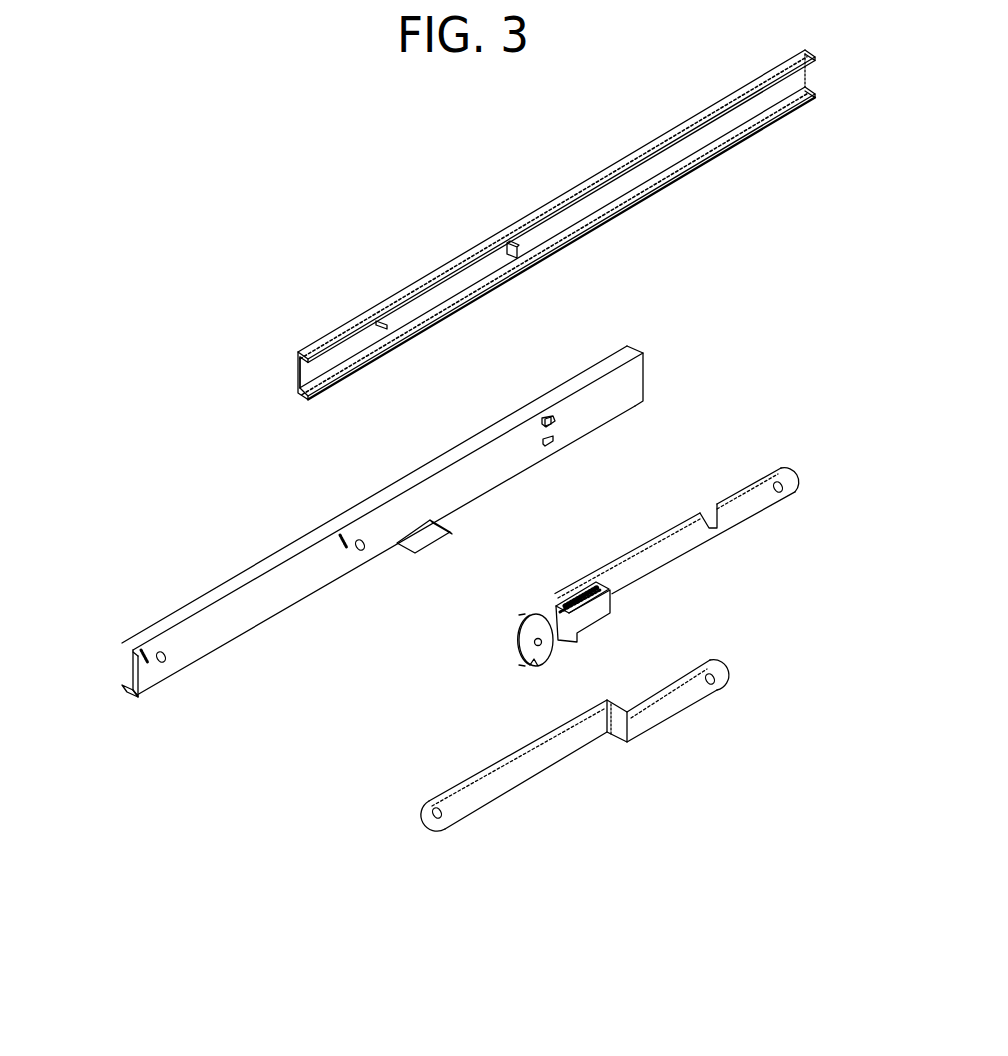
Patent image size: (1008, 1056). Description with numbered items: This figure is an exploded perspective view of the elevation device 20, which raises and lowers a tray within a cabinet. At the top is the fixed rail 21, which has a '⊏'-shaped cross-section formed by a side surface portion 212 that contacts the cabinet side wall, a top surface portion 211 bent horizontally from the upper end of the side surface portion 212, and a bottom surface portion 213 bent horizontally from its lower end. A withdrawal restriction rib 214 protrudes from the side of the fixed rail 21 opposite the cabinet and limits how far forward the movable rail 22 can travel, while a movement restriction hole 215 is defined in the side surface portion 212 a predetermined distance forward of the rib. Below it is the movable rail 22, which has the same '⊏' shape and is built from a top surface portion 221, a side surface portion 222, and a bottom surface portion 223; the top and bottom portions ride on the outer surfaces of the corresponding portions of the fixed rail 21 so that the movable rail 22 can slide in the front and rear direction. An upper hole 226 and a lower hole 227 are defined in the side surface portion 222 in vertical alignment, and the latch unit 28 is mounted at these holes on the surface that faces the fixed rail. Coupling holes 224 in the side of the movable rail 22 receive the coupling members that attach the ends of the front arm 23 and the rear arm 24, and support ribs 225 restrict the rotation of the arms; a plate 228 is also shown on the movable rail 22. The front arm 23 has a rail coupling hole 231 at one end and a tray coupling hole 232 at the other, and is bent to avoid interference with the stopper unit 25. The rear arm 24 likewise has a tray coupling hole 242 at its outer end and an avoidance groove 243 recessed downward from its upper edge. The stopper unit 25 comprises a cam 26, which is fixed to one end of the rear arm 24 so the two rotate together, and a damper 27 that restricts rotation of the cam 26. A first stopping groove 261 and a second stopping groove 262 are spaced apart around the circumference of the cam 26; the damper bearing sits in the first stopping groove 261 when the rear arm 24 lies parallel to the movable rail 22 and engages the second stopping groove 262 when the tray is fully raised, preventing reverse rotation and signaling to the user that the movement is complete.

The elevation device 20 is at (306, 146).
The fixed rail 21 is at (583, 231).
The top surface portion 211 is at (750, 102).
The side surface portion 212 is at (727, 125).
The bottom surface portion 213 is at (717, 150).
The withdrawal restriction rib 214 is at (508, 262).
The movement restriction hole 215 is at (378, 325).
The movable rail 22 is at (349, 547).
The top surface portion 221 is at (153, 630).
The side surface portion 222 is at (130, 662).
The bottom surface portion 223 is at (126, 686).
The coupling holes 224 is at (166, 662).
The support ribs 225 is at (145, 663).
The upper hole 226 is at (544, 423).
The lower hole 227 is at (556, 440).
The plate 228 is at (450, 530).
The latch unit 28 is at (549, 416).
The front arm 23 is at (583, 780).
The rail coupling hole 231 is at (441, 821).
The tray coupling hole 232 is at (714, 688).
The rear arm 24 is at (704, 523).
The tray coupling hole 242 is at (786, 488).
The avoidance groove 243 is at (699, 510).
The stopper unit 25 is at (512, 656).
The cam 26 is at (509, 672).
The first stopping groove 261 is at (545, 652).
The second stopping groove 262 is at (528, 664).
The damper 27 is at (558, 604).